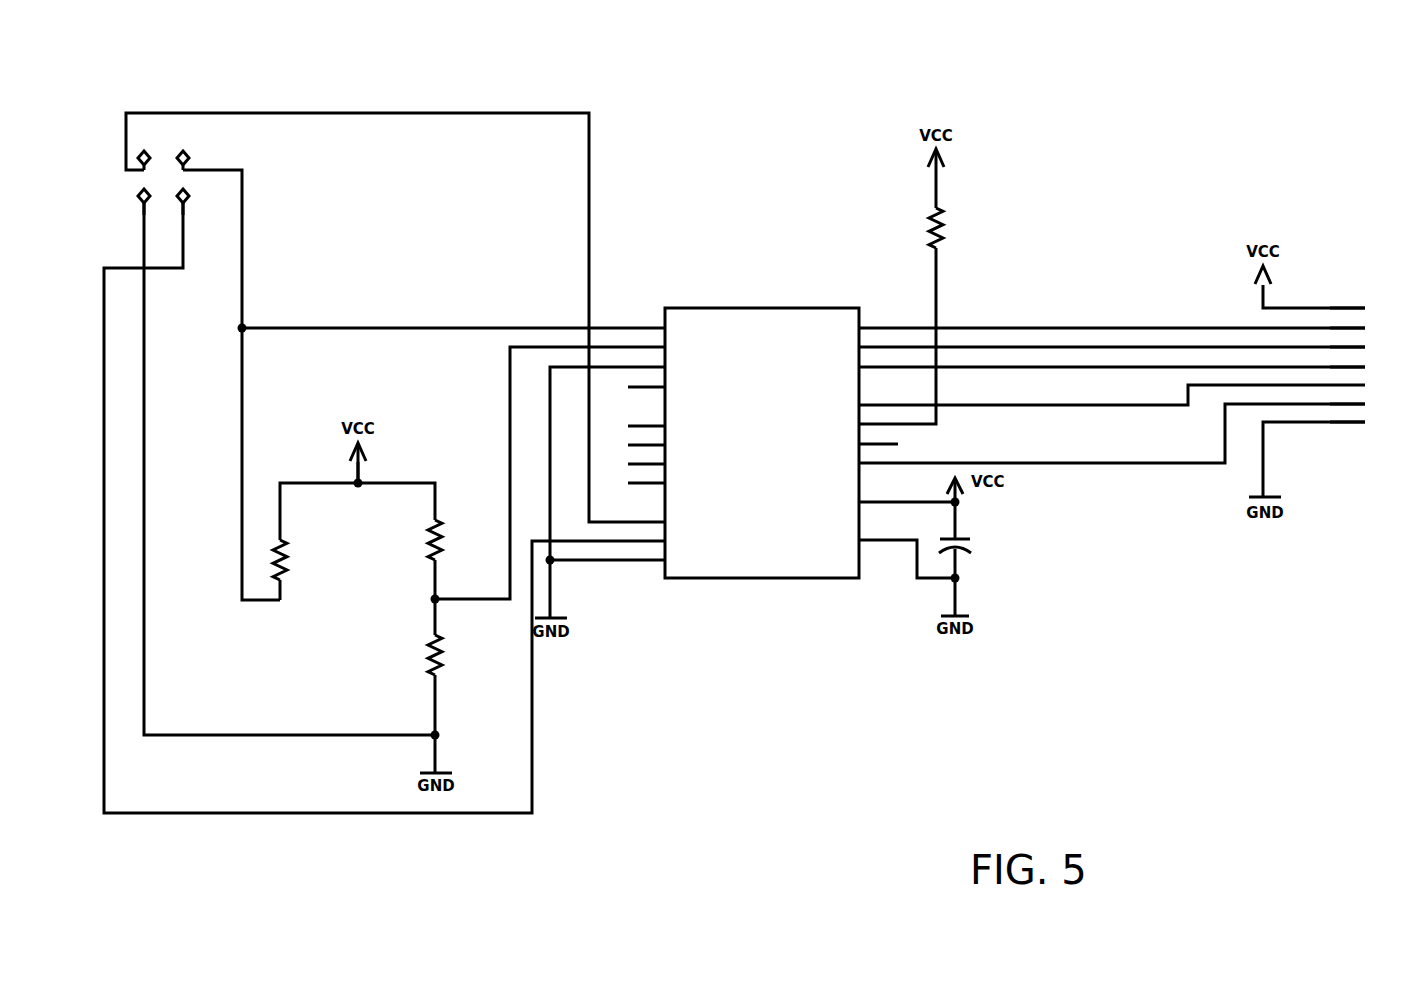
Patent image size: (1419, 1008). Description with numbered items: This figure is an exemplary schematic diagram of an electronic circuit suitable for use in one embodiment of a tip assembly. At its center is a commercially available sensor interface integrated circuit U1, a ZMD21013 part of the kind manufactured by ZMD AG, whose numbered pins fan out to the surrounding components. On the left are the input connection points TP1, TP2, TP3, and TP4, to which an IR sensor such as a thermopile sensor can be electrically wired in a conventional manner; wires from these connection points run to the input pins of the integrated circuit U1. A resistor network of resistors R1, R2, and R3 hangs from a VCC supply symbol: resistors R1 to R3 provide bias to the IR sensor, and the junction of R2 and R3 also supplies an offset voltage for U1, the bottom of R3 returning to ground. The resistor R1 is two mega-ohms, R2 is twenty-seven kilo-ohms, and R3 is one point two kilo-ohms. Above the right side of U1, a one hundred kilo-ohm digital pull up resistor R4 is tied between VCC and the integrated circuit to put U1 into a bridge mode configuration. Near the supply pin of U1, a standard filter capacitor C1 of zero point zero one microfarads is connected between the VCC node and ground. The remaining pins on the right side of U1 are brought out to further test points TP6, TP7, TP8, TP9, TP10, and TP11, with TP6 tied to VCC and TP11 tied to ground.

The sensor interface integrated circuit U1 is at (761, 412).
The resistor R1 is at (269, 560).
The resistor R2 is at (424, 541).
The resistor R3 is at (424, 657).
The digital pull up resistor R4 is at (925, 233).
The filter capacitor C1 is at (963, 540).
The input connection point TP1 is at (147, 153).
The input connection point TP2 is at (188, 153).
The input connection point TP3 is at (197, 205).
The input connection point TP4 is at (129, 205).
The test point TP6 is at (1365, 308).
The test point TP7 is at (1365, 329).
The test point TP8 is at (1365, 353).
The test point TP9 is at (1365, 376).
The test point TP10 is at (1369, 399).
The test point TP11 is at (1369, 422).